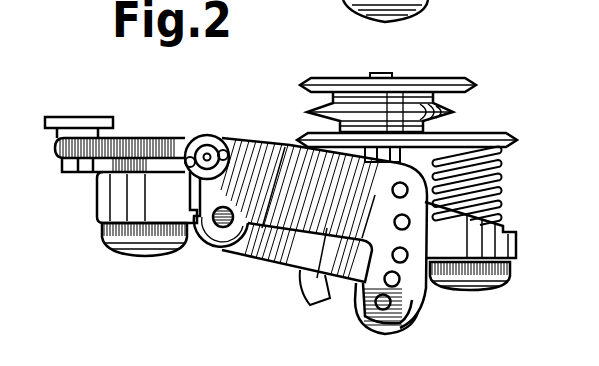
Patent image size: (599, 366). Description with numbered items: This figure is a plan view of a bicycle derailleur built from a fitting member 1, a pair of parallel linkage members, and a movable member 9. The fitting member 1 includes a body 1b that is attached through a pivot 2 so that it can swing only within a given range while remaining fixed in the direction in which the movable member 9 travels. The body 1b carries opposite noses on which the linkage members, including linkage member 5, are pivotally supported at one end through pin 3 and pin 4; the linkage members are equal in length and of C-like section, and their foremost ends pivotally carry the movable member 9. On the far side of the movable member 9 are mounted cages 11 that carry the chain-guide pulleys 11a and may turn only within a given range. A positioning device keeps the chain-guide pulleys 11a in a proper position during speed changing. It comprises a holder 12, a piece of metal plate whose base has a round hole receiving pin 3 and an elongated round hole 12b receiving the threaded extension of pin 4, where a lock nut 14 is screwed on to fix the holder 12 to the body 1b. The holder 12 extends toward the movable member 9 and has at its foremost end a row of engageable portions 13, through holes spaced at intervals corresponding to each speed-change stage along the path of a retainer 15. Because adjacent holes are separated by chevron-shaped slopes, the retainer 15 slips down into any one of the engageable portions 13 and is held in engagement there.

The fitting member 1 is at (56, 153).
The body 1b is at (97, 214).
The pivot 2 is at (145, 256).
The pin 3 is at (222, 229).
The pin 4 is at (207, 149).
The linkage member 5 is at (278, 268).
The movable member 9 is at (517, 256).
The cage 11 is at (434, 84).
The chain-guide pulley 11a is at (452, 111).
The holder 12 is at (258, 141).
The elongated round hole 12b is at (226, 148).
The engageable portions 13 is at (400, 285).
The lock nut 14 is at (195, 147).
The retainer 15 is at (363, 316).